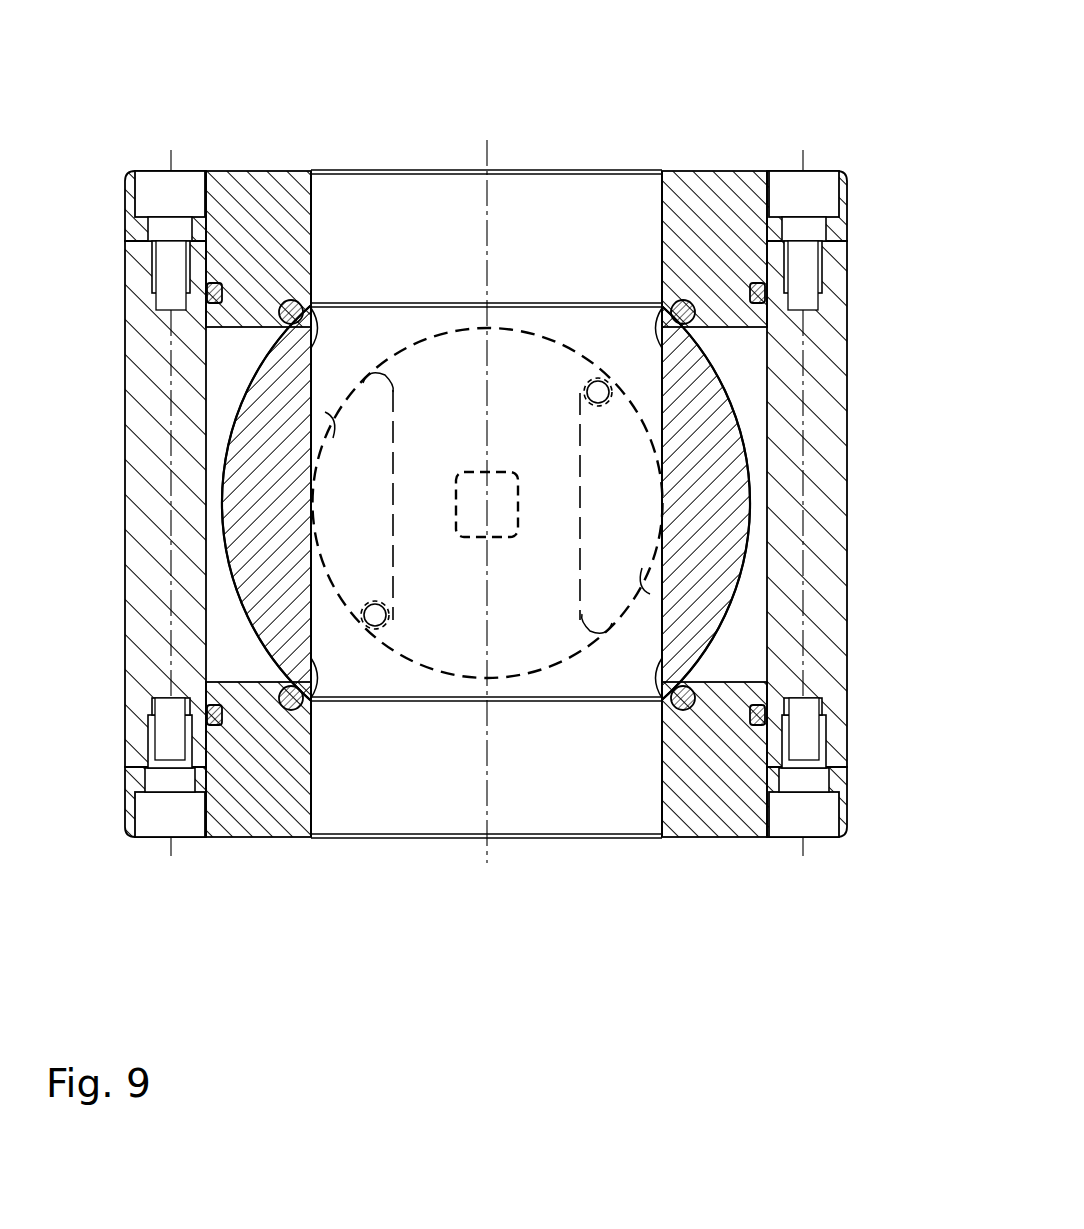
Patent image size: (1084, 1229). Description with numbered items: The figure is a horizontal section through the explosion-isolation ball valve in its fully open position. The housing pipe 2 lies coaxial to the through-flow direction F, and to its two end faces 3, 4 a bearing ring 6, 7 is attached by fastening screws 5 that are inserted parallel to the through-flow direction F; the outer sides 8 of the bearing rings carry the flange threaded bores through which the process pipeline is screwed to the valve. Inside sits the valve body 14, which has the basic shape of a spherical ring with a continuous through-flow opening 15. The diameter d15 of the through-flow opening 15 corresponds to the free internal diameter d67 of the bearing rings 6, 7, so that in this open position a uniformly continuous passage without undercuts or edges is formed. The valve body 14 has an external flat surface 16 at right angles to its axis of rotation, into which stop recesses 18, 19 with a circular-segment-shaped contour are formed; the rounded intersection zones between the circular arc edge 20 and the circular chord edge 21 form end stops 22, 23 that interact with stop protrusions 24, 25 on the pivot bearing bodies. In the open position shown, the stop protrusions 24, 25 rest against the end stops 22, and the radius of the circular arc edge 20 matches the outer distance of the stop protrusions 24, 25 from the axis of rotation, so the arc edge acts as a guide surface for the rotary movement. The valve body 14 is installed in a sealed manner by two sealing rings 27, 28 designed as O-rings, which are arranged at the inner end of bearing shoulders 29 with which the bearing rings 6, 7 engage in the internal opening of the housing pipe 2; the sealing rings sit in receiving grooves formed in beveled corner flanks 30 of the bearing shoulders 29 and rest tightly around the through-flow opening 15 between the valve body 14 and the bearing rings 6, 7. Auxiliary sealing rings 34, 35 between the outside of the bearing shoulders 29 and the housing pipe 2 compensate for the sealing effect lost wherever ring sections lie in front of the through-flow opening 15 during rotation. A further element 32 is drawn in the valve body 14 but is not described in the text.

The housing pipe 2 is at (827, 572).
The end face 3 is at (835, 235).
The end face 4 is at (848, 790).
The fastening screws 5 is at (826, 190).
The bearing ring 6 is at (727, 180).
The bearing ring 7 is at (753, 823).
The outer sides 8 is at (736, 838).
The valve body 14 is at (757, 450).
The through-flow opening 15 is at (612, 318).
The external flat surface 16 is at (563, 660).
The stop recess 18 is at (343, 445).
The stop recess 19 is at (633, 485).
The circular arc edge 20 is at (330, 428).
The circular chord edge 21 is at (583, 467).
The end stop 22 is at (605, 392).
The end stop 23 is at (363, 383).
The stop protrusion 24 is at (363, 623).
The stop protrusion 25 is at (585, 385).
The sealing ring 27 is at (690, 325).
The sealing ring 28 is at (685, 693).
The bearing shoulders 29 is at (262, 296).
The beveled corner flanks 30 is at (300, 353).
The shaft receptacle 32 is at (518, 497).
The auxiliary sealing ring 34 is at (765, 296).
The auxiliary sealing ring 35 is at (767, 715).
The diameter of the through-flow opening d15 is at (662, 545).
The free internal diameter of the bearing rings d67 is at (662, 171).
The through-flow direction F is at (490, 765).